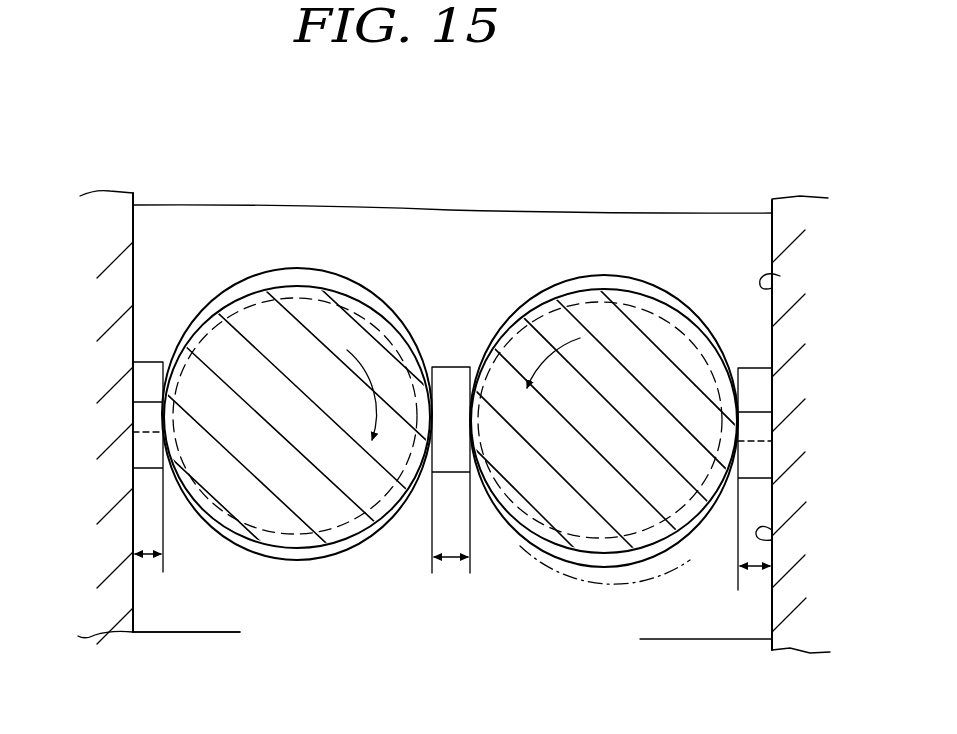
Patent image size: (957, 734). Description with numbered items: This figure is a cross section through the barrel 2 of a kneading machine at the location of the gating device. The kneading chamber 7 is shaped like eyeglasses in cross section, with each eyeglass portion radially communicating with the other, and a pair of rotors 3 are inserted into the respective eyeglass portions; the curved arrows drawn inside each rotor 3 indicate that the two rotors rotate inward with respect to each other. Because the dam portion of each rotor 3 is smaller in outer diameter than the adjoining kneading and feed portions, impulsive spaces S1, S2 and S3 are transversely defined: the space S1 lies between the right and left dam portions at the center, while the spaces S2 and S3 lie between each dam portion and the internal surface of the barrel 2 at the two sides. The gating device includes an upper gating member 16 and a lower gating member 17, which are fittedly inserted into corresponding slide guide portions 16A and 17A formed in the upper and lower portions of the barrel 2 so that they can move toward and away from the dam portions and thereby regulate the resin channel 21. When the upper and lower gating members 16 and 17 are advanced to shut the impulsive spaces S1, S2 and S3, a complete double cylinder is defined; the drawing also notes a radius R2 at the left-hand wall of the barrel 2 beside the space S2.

The barrel 2 is at (100, 227).
The rotor 3 is at (286, 332).
The kneading chamber 7 is at (193, 312).
The upper gating member 16 is at (176, 240).
The slide guide portion 16A is at (775, 290).
The lower gating member 17 is at (205, 598).
The slide guide portion 17A is at (772, 540).
The resin channel 21 is at (596, 545).
The radius R2 is at (143, 526).
The impulsive space S1 is at (450, 562).
The impulsive space S2 is at (145, 565).
The impulsive space S3 is at (752, 570).